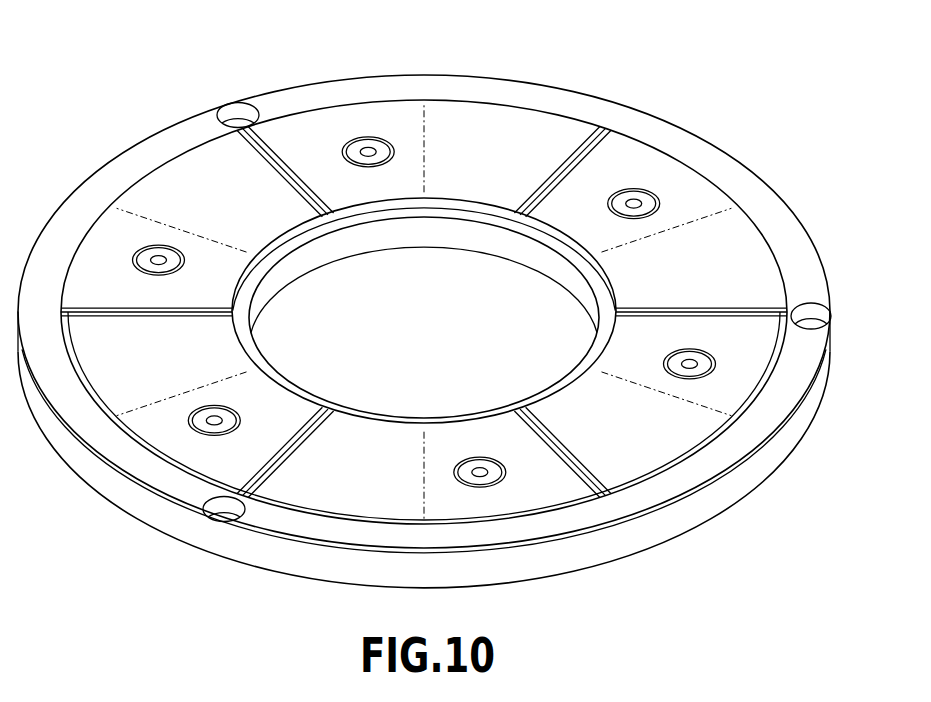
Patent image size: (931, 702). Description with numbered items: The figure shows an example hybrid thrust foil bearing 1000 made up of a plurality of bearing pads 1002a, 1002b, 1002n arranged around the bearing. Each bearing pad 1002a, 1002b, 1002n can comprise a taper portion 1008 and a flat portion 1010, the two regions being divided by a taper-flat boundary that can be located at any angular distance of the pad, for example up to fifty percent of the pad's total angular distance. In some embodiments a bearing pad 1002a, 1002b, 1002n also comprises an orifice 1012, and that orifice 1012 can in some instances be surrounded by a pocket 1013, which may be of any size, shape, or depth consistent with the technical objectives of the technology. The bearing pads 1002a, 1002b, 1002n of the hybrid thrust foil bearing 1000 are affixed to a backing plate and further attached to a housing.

The hybrid thrust foil bearing 1000 is at (665, 88).
The bearing pad 1002a is at (492, 132).
The bearing pad 1002b is at (733, 246).
The bearing pad 1002n is at (668, 442).
The taper portion 1008 is at (338, 187).
The flat portion 1010 is at (487, 185).
The orifice 1012 is at (371, 146).
The pocket 1013 is at (290, 112).